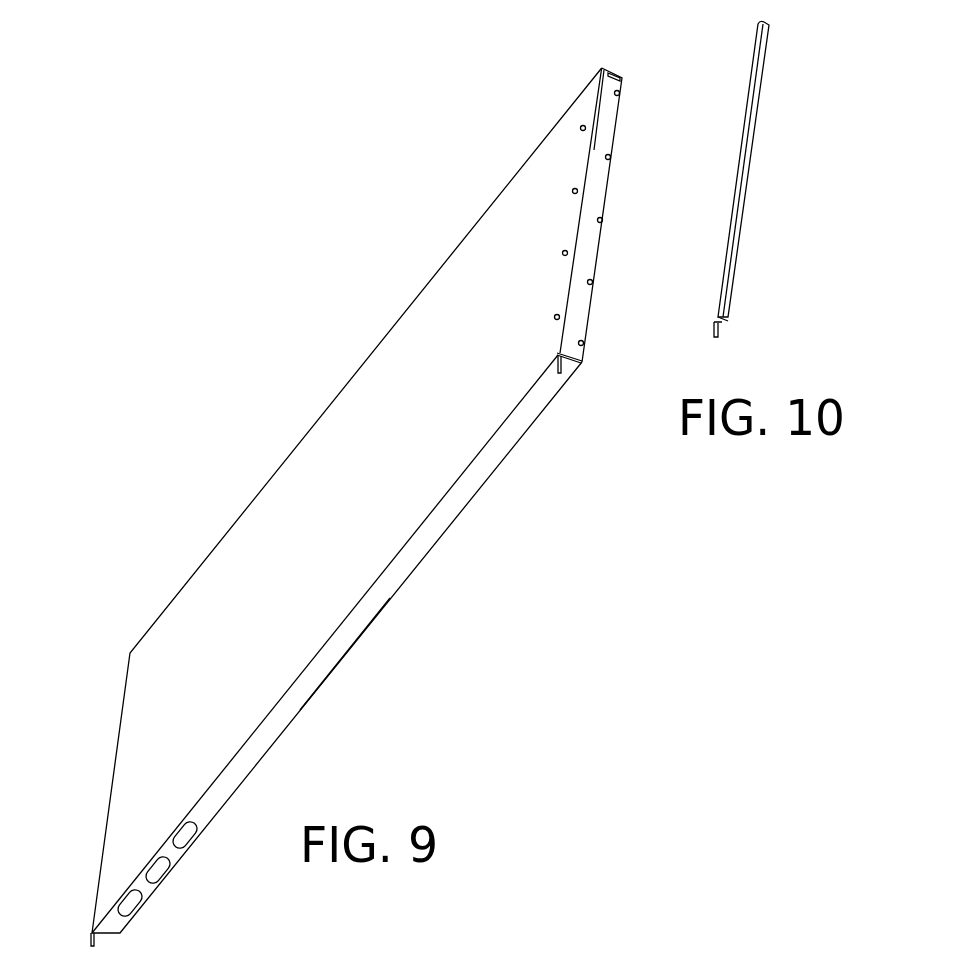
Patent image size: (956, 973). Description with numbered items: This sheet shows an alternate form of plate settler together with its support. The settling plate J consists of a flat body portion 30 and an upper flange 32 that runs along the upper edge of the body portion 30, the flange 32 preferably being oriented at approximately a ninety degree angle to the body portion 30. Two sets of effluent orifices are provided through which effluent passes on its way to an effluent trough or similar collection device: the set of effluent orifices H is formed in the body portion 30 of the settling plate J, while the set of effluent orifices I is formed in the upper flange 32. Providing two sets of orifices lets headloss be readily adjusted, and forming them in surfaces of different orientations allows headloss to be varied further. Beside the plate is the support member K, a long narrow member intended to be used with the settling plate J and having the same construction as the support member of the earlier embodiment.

In FIG. 9, the body portion 30 is at (373, 507).
In FIG. 9, the upper flange 32 is at (605, 103).
In FIG. 9, the set of effluent orifices H is at (573, 121).
In FIG. 9, the set of effluent orifices I is at (645, 97).
In FIG. 9, the settling plate J is at (377, 623).
In FIG. 10, the support member K is at (748, 202).